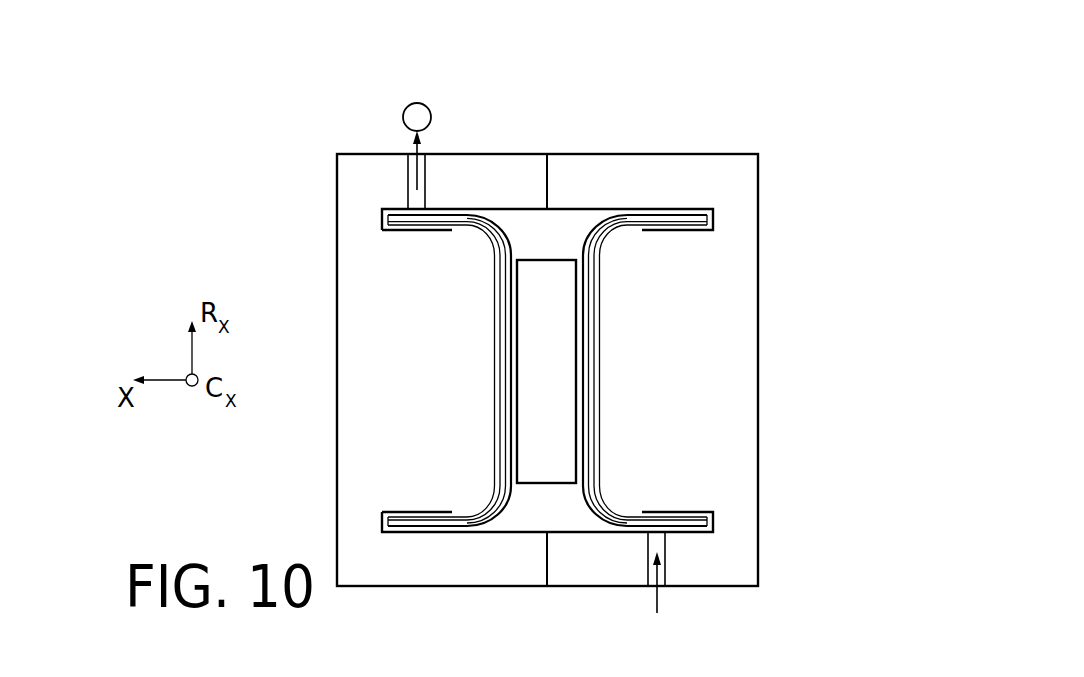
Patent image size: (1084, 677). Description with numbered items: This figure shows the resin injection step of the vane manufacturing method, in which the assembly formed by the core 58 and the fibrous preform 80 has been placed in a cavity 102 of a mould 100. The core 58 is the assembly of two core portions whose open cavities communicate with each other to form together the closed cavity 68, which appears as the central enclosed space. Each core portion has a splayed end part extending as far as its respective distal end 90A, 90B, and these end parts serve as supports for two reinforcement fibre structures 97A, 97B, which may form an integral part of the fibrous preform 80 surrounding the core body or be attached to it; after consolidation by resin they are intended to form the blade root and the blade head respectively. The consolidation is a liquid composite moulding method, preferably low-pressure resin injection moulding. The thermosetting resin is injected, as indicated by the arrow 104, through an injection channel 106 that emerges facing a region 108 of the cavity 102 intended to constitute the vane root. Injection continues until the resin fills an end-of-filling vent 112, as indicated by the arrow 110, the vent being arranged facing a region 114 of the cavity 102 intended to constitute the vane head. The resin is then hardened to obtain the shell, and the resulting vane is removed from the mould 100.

The core 58 is at (592, 318).
The closed cavity 68 is at (577, 423).
The fibrous preform 80 is at (592, 288).
The distal end 90A is at (568, 208).
The distal end 90B is at (518, 525).
The reinforcement fibre structure 97A is at (695, 222).
The reinforcement fibre structure 97B is at (665, 520).
The mould 100 is at (353, 435).
The cavity 102 is at (497, 357).
The arrow 104 is at (658, 602).
The injection channel 106 is at (662, 568).
The region 108 is at (710, 528).
The arrow 110 is at (420, 150).
The end-of-filling vent 112 is at (412, 182).
The region 114 is at (688, 217).